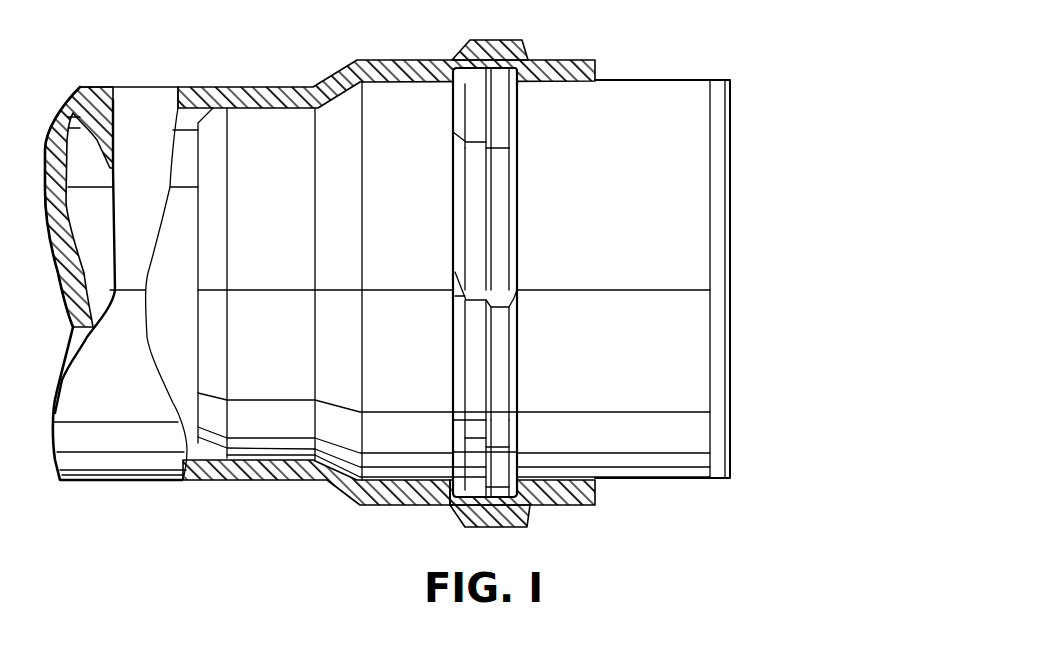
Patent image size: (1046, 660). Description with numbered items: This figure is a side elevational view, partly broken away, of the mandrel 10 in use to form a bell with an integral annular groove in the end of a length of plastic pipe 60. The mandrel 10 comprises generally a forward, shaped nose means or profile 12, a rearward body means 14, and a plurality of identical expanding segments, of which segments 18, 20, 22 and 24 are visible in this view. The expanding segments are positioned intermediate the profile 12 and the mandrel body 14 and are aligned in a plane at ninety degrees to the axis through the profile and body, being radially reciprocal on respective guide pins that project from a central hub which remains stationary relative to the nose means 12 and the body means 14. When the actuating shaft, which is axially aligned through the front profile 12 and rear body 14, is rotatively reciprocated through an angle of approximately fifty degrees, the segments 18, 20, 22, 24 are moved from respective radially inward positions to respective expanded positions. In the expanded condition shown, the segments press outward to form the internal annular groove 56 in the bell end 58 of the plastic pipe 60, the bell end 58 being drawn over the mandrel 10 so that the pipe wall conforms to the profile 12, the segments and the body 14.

The mandrel 10 is at (628, 482).
The nose means or profile 12 is at (262, 125).
The body means 14 is at (642, 90).
The expanding segment 18 is at (500, 108).
The expanding segment 20 is at (500, 200).
The expanding segment 22 is at (503, 347).
The expanding segment 24 is at (500, 468).
The internal annular groove 56 is at (478, 497).
The bell end 58 is at (385, 68).
The plastic pipe 60 is at (130, 102).